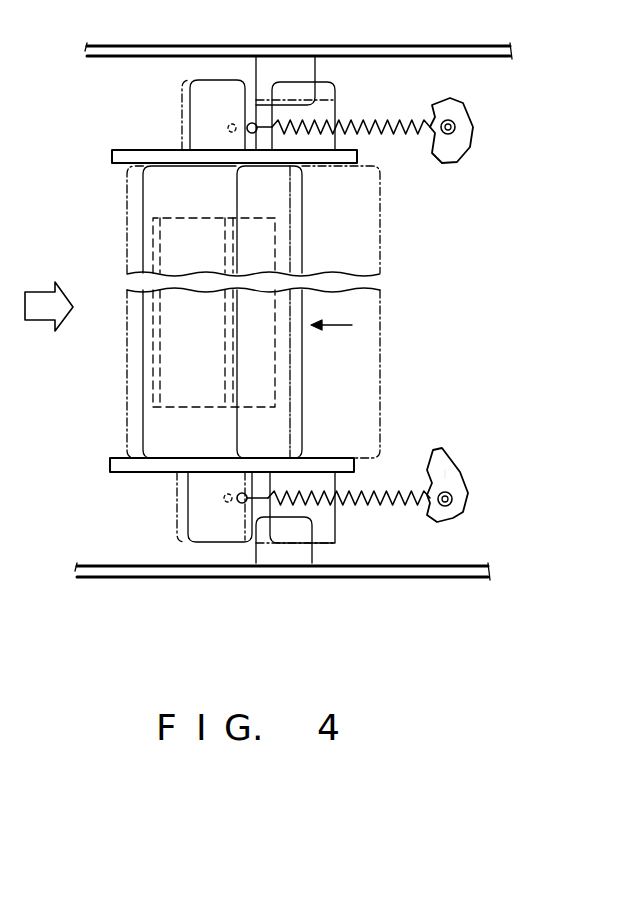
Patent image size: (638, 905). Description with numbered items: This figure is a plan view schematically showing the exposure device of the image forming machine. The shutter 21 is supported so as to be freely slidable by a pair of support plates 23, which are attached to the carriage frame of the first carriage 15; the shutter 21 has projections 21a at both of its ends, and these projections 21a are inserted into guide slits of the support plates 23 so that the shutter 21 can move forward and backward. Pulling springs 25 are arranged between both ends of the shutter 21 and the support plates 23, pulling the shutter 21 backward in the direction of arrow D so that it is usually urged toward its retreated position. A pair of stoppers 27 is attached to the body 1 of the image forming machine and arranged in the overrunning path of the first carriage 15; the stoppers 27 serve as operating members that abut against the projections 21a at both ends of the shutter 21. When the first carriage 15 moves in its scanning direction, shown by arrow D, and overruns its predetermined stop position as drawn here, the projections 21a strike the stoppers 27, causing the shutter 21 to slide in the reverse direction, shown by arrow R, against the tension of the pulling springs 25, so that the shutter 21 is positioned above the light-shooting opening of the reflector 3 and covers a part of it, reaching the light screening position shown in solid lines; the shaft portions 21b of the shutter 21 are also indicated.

The machine body 1 is at (436, 42).
The reflector 3 is at (165, 357).
The first carriage 15 is at (450, 478).
The shutter 21 is at (127, 245).
The projections 21a is at (210, 77).
The roller shaft 21b is at (128, 189).
The support plates 23 is at (135, 148).
The pulling springs 25 is at (412, 133).
The stoppers 27 is at (288, 66).
The reverse direction R is at (337, 327).
The scanning direction D is at (43, 320).